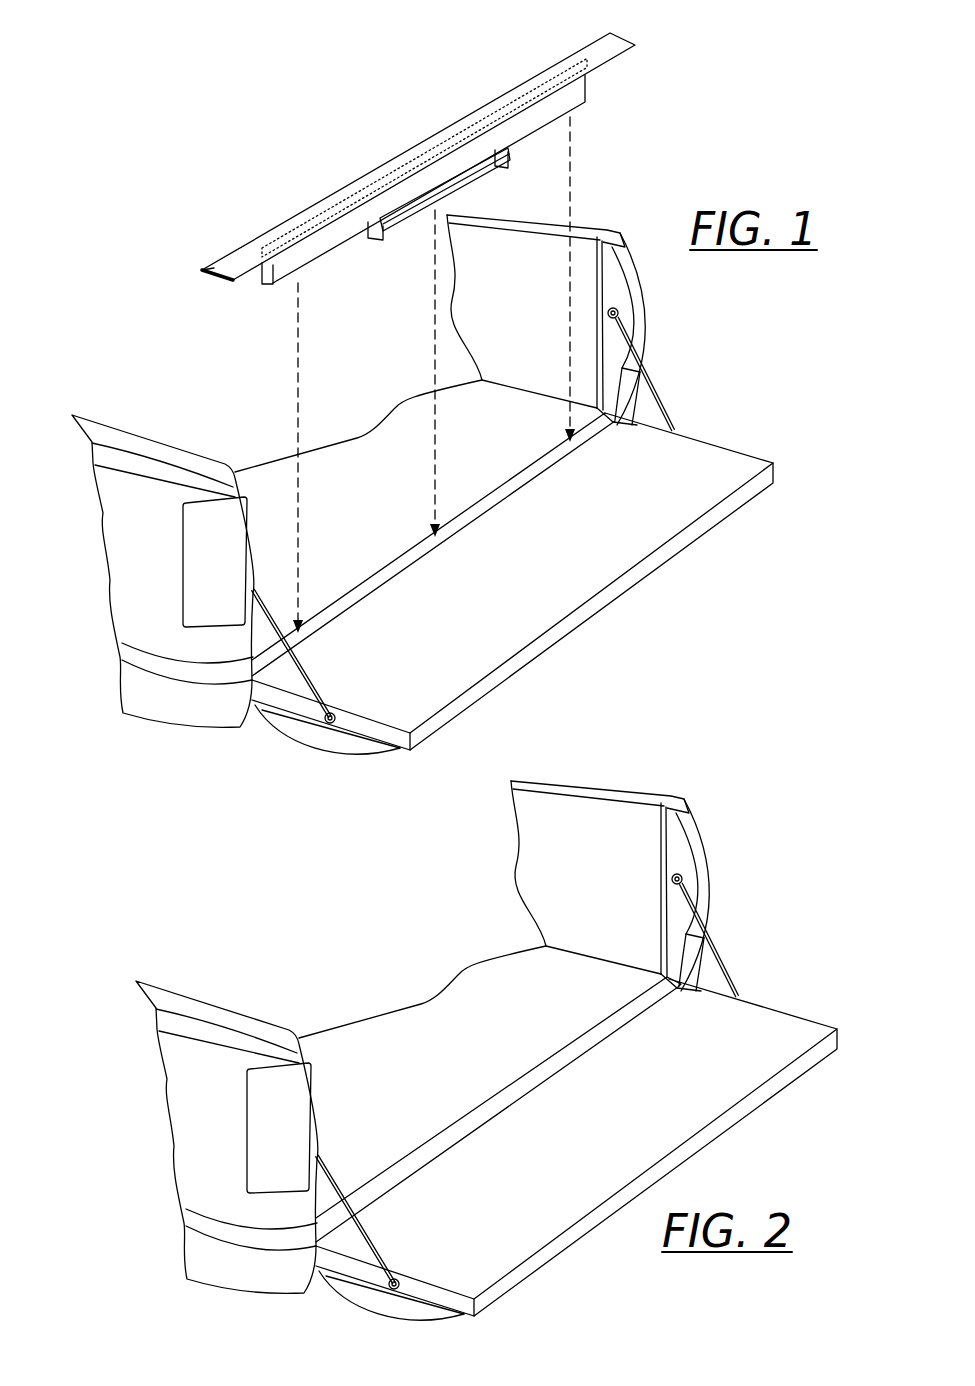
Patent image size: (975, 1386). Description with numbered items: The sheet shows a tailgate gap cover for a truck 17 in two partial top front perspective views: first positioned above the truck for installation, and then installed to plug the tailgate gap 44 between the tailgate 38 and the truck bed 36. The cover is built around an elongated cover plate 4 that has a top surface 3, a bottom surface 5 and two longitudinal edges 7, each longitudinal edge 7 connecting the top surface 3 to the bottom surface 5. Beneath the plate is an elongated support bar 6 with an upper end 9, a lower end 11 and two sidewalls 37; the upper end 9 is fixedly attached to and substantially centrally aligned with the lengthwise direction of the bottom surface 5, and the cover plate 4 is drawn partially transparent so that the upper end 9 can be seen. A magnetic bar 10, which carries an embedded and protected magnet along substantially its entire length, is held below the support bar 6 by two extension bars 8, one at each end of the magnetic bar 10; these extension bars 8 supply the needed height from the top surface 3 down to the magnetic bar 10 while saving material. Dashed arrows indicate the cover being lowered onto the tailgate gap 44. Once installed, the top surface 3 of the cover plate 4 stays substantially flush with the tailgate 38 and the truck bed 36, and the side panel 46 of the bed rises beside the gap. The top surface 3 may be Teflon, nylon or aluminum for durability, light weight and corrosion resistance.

In FIG. 1, the top surface 3 is at (222, 265).
In FIG. 1, the elongated cover plate 4 is at (616, 43).
In FIG. 2, the elongated cover plate 4 is at (498, 1109).
In FIG. 1, the bottom surface 5 is at (230, 286).
In FIG. 1, the elongated support bar 6 is at (600, 93).
In FIG. 1, the longitudinal edge 7 is at (313, 212).
In FIG. 1, the extension bar 8 is at (505, 152).
In FIG. 1, the upper end 9 is at (278, 240).
In FIG. 1, the magnetic bar 10 is at (392, 230).
In FIG. 1, the lower end 11 is at (270, 288).
In FIG. 1, the truck 17 is at (62, 722).
In FIG. 2, the truck 17 is at (484, 1032).
In FIG. 1, the truck bed 36 is at (360, 440).
In FIG. 2, the truck bed 36 is at (341, 1133).
In FIG. 1, the sidewall 37 is at (296, 258).
In FIG. 1, the tailgate 38 is at (735, 455).
In FIG. 2, the tailgate 38 is at (578, 1146).
In FIG. 1, the tailgate gap 44 is at (525, 475).
In FIG. 1, the side panel 46 is at (590, 230).
In FIG. 2, the side panel 46 is at (624, 870).